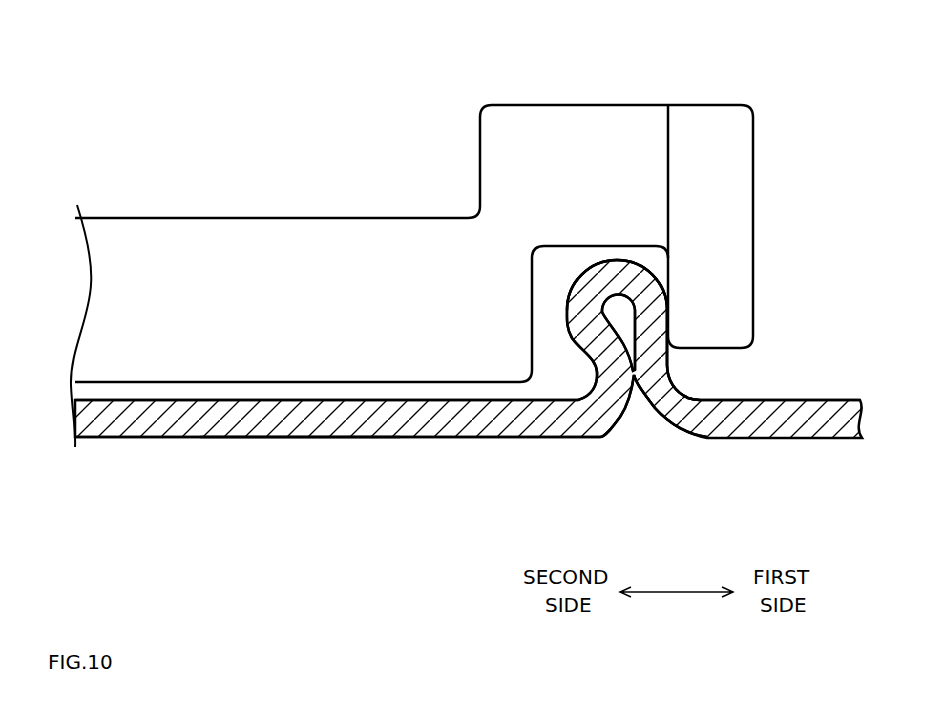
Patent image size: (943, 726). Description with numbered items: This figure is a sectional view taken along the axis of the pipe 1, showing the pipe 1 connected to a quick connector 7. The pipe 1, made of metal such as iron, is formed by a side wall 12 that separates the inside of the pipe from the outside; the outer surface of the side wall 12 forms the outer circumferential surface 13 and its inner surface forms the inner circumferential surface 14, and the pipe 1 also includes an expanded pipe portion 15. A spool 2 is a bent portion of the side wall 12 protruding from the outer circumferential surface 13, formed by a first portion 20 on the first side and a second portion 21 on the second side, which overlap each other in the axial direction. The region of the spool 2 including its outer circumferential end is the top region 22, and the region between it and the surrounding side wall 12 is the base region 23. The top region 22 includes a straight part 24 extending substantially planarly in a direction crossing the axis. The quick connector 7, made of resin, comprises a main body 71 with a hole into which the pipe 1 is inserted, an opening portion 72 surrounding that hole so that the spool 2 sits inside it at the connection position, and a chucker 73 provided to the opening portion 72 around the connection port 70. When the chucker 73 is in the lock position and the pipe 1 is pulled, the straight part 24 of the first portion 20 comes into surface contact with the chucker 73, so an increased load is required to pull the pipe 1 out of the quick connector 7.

The pipe 1 is at (433, 403).
The spool 2 is at (630, 386).
The quick connector 7 is at (453, 235).
The side wall 12 is at (160, 420).
The outer circumferential surface 13 is at (222, 400).
The inner circumferential surface 14 is at (250, 436).
The expanded pipe portion 15 is at (380, 463).
The first portion 20 is at (650, 322).
The second portion 21 is at (600, 337).
The top region 22 is at (546, 280).
The base region 23 is at (693, 372).
The straight part 24 is at (672, 326).
The connection port 70 is at (753, 387).
The main body 71 is at (227, 243).
The opening portion 72 is at (578, 134).
The chucker 73 is at (711, 160).